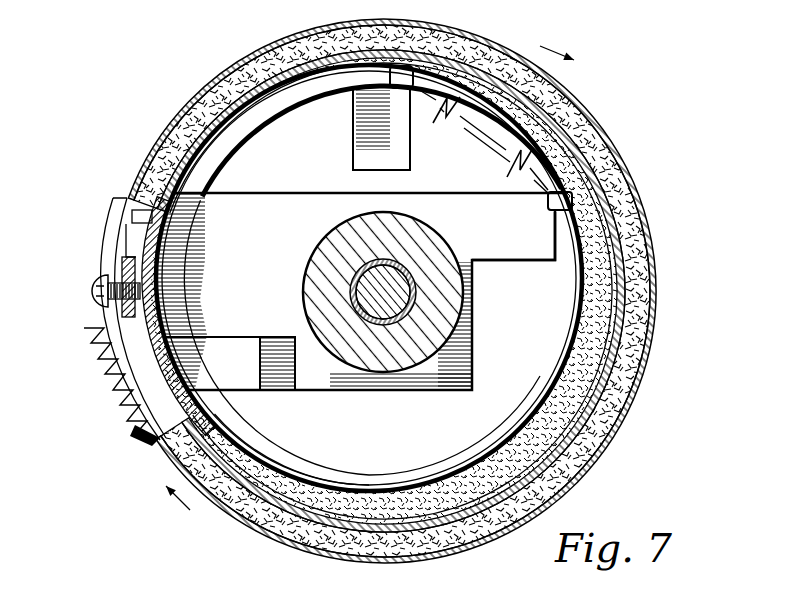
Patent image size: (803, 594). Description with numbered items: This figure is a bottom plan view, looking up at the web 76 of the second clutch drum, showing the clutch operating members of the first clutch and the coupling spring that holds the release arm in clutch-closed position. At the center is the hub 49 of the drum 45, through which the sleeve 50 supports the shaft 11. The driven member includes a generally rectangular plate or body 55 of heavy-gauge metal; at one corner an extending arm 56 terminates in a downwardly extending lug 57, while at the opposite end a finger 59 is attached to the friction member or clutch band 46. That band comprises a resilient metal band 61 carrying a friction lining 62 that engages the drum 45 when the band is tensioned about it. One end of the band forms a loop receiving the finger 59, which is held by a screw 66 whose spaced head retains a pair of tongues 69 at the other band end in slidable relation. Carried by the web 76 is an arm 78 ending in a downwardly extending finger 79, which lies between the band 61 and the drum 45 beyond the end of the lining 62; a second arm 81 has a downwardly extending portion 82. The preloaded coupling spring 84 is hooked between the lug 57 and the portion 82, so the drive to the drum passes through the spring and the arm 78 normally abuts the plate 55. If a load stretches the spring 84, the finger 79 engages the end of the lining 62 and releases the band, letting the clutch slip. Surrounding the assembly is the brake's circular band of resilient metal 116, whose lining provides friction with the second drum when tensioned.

The shaft 11 is at (386, 308).
The drum 45 is at (656, 312).
The friction member (clutch band) 46 is at (658, 354).
The hub 49 is at (442, 318).
The sleeve 50 is at (380, 305).
The body (plate) 55 is at (464, 350).
The extending arm 56 is at (528, 262).
The lug 57 is at (574, 200).
The finger 59 is at (110, 272).
The resilient metal band 61 is at (250, 520).
The lining 62 is at (598, 427).
The screw 66 is at (130, 212).
The tongues 69 is at (120, 234).
The web 76 is at (590, 484).
The arm 78 is at (265, 392).
The finger 79 is at (100, 372).
The second arm 81 is at (368, 147).
The downwardly extending portion 82 is at (357, 82).
The coupling spring 84 is at (535, 155).
The circular band of resilient metal 116 is at (600, 238).